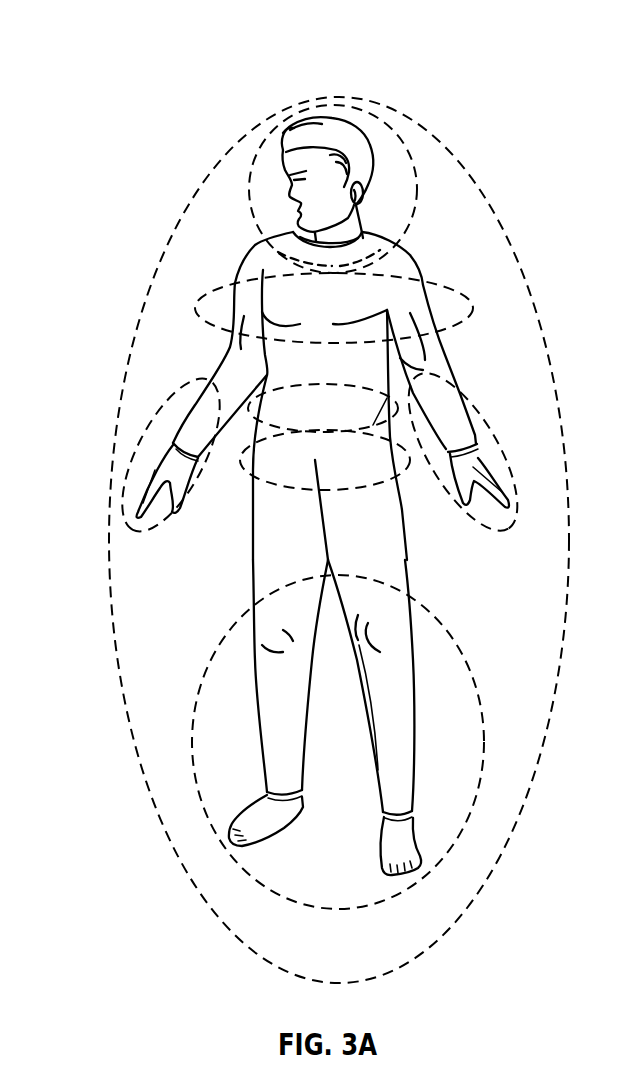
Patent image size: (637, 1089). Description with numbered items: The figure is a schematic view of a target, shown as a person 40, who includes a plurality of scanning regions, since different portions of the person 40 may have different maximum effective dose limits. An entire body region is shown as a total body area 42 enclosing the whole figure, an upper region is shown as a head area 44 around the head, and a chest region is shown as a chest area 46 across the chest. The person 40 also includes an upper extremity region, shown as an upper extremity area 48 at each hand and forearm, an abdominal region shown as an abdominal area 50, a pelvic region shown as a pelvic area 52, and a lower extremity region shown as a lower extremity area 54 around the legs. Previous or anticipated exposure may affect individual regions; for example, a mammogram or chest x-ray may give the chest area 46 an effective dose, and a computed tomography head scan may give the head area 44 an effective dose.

The person 40 is at (512, 58).
The total body area 42 is at (496, 213).
The head area 44 is at (250, 182).
The chest area 46 is at (472, 310).
The upper extremity area 48 is at (127, 509).
The abdominal area 50 is at (341, 380).
The pelvic area 52 is at (267, 483).
The lower extremity area 54 is at (483, 746).